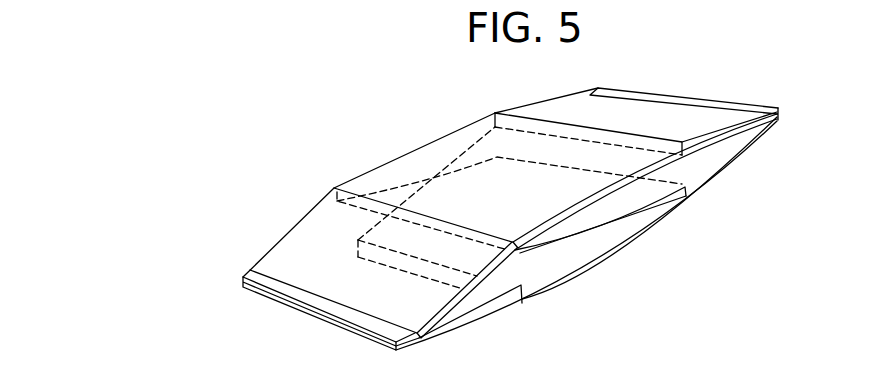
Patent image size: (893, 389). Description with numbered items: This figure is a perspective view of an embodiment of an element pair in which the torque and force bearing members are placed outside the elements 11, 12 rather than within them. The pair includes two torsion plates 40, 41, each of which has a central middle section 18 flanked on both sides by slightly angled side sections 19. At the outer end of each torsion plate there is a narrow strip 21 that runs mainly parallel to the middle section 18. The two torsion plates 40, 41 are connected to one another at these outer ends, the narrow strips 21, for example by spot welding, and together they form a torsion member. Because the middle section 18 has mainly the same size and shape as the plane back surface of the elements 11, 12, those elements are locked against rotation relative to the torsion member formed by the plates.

The element 11 is at (607, 208).
The element 12 is at (593, 247).
The central middle section 18 is at (462, 177).
The side section 19 is at (302, 242).
The narrow strip 21 is at (312, 302).
The torsion plate 40 is at (698, 127).
The torsion plate 41 is at (702, 172).